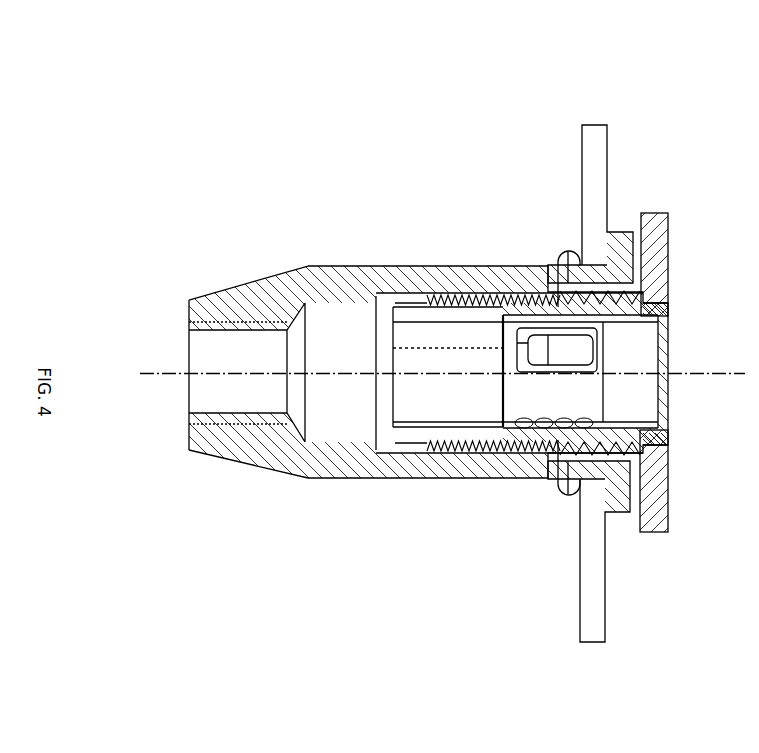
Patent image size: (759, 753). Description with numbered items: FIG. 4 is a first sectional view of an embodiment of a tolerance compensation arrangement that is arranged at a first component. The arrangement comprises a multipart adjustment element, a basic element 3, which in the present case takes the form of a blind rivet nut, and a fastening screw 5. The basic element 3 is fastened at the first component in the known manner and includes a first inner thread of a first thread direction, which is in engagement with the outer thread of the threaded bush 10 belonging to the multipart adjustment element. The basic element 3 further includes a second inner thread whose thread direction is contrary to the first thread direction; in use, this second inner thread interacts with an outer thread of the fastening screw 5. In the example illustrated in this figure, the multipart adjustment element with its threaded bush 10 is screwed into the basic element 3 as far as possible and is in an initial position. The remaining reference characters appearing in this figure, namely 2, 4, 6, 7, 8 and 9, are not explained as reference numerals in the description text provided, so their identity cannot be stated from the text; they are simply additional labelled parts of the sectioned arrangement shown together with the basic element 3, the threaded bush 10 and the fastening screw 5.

The nut 2 is at (227, 417).
The basic element 3 is at (354, 266).
The lever 4 is at (597, 125).
The fastening screw 5 is at (667, 212).
The end wall 6 is at (665, 437).
The inner sleeve 7 is at (471, 430).
The thread 8 is at (388, 443).
The clip 9 is at (565, 348).
The threaded bush 10 is at (553, 400).